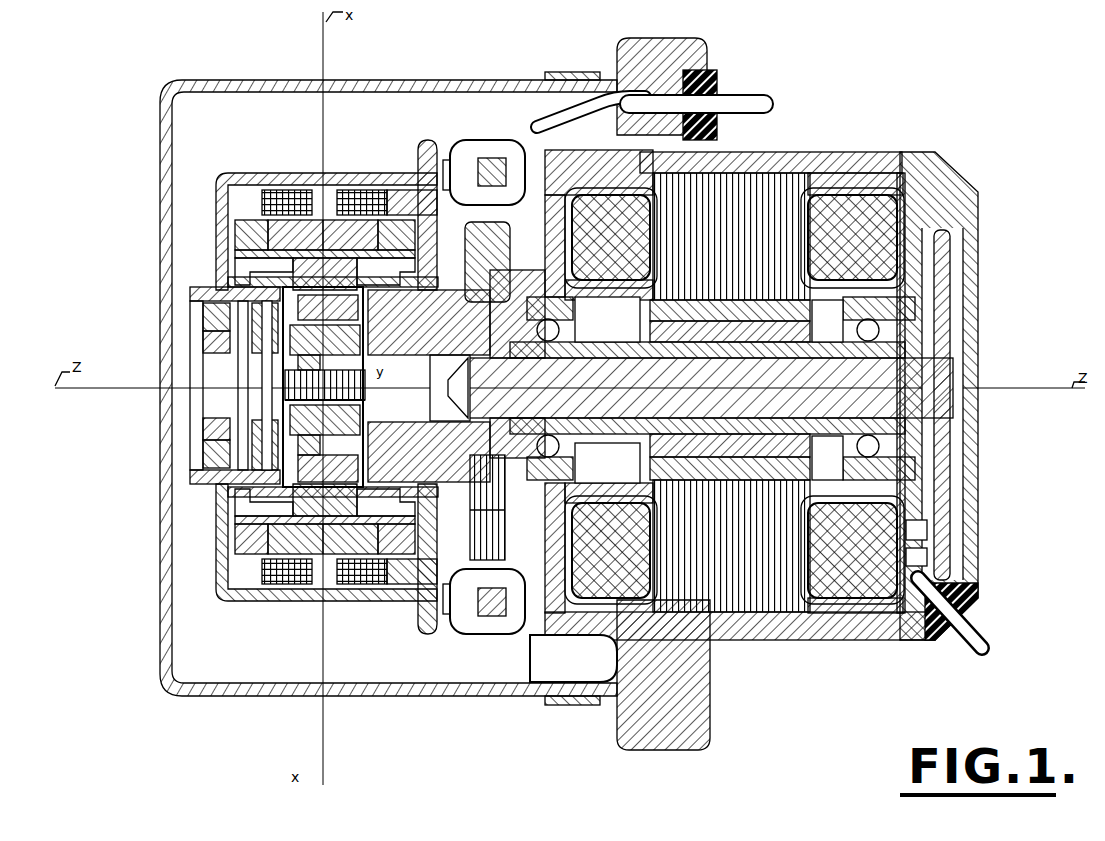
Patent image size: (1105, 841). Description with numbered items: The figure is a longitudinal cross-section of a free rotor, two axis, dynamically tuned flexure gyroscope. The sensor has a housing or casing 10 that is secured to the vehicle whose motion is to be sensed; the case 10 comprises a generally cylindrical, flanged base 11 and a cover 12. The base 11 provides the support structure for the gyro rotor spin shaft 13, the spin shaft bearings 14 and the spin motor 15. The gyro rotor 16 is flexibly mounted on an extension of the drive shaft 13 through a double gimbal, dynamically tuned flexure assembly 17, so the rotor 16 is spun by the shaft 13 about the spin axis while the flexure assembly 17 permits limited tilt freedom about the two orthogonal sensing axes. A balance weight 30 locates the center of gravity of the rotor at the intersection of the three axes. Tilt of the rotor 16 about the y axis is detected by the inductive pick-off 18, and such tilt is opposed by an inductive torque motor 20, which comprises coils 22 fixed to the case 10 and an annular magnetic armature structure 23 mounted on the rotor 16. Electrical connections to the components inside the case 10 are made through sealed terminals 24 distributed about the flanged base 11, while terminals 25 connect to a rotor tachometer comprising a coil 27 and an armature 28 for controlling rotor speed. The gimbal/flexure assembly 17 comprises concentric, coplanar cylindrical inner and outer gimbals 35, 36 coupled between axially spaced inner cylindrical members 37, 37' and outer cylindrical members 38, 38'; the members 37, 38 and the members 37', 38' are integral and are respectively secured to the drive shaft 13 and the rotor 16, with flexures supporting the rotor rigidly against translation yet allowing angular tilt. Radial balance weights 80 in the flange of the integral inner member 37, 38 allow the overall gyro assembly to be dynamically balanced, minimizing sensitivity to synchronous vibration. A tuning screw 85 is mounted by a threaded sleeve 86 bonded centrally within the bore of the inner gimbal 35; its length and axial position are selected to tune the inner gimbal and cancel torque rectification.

The housing or casing 10 is at (966, 170).
The flanged base 11 is at (712, 680).
The cover 12 is at (238, 697).
The rotor spin shaft 13 is at (958, 384).
The spin shaft bearings 14 is at (565, 322).
The spin motor 15 is at (834, 152).
The gyro rotor 16 is at (232, 600).
The double gimbal dynamically tuned flexure assembly 17 is at (280, 402).
The inductive pick-off 18 is at (492, 140).
The inductive torque motor 20 is at (290, 172).
The coils 22 is at (355, 192).
The annular magnetic armature structure 23 is at (216, 232).
The sealed terminals 24 is at (742, 96).
The terminals 25 is at (985, 636).
The coil 27 is at (945, 575).
The armature 28 is at (930, 538).
The balance weight 30 is at (210, 432).
The inner gimbal 35 is at (240, 372).
The outer gimbal 36 is at (252, 455).
The inner cylindrical member 37 is at (452, 358).
The inner cylindrical member 37' is at (180, 385).
The outer cylindrical member 38 is at (475, 262).
The outer cylindrical member 38' is at (190, 381).
The radial balance weights 80 is at (502, 520).
The tuning screw 85 is at (384, 386).
The threaded sleeve 86 is at (355, 406).